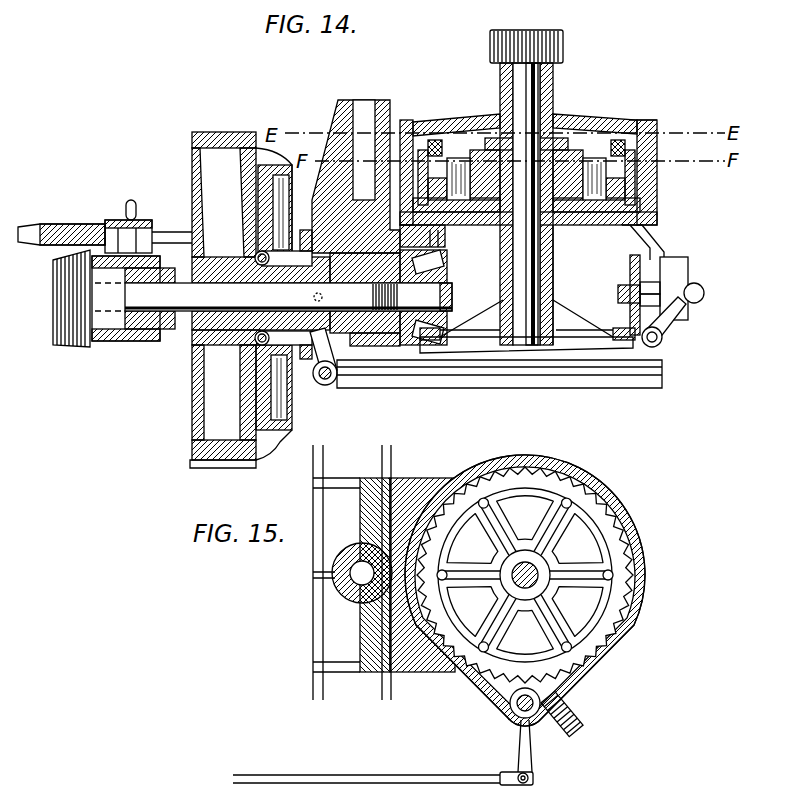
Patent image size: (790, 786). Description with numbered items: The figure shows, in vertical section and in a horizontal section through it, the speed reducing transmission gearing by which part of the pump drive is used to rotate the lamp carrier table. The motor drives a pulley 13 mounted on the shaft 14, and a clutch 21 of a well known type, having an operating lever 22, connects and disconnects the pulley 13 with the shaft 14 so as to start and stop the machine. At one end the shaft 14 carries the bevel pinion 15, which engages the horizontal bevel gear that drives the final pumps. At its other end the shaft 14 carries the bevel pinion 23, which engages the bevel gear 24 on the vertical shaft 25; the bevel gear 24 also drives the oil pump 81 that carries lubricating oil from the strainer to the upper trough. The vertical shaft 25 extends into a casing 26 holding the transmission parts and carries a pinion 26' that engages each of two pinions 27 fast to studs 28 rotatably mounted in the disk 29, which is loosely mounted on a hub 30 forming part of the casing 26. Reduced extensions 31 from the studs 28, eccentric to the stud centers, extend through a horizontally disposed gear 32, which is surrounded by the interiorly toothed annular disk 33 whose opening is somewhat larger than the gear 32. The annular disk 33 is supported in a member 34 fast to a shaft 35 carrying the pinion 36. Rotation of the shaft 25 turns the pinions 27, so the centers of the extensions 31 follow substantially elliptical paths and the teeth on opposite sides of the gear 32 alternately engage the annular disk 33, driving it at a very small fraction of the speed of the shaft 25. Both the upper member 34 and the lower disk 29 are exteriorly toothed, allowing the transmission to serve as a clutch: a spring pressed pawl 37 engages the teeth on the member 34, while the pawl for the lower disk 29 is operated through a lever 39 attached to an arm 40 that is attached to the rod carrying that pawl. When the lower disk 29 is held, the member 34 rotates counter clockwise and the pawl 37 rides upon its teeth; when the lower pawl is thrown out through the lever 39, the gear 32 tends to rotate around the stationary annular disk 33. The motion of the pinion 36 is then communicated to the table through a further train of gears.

In FIG. 14, the pulley 13 is at (213, 466).
In FIG. 14, the shaft 14 is at (152, 343).
In FIG. 14, the bevel pinion 15 is at (53, 318).
In FIG. 14, the clutch 21 is at (312, 258).
In FIG. 14, the operating lever 22 is at (372, 380).
In FIG. 14, the bevel pinion 23 is at (441, 268).
In FIG. 14, the bevel gear 24 is at (462, 335).
In FIG. 14, the vertical shaft 25 is at (553, 271).
In FIG. 14, the casing 26 is at (545, 172).
In FIG. 14, the pinion 26' is at (536, 145).
In FIG. 14, the pinion 27 is at (656, 193).
In FIG. 14, the stud 28 is at (478, 206).
In FIG. 14, the disk 29 is at (632, 202).
In FIG. 14, the hub 30 is at (554, 232).
In FIG. 14, the reduced extension 31 is at (466, 160).
In FIG. 14, the gear 32 is at (440, 140).
In FIG. 14, the annular disk 33 is at (630, 160).
In FIG. 14, the member 34 is at (555, 120).
In FIG. 15, the member 34 is at (600, 522).
In FIG. 14, the shaft 35 is at (500, 82).
In FIG. 14, the pinion 36 is at (563, 46).
In FIG. 15, the spring pressed pawl 37 is at (564, 693).
In FIG. 15, the lever 39 is at (455, 775).
In FIG. 15, the arm 40 is at (518, 746).
In FIG. 14, the pump 81 is at (690, 276).